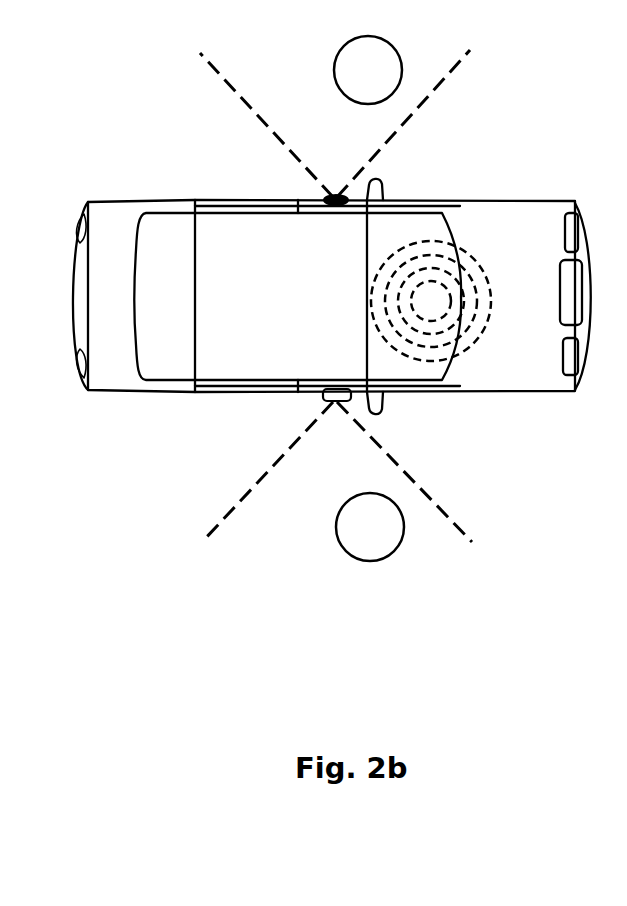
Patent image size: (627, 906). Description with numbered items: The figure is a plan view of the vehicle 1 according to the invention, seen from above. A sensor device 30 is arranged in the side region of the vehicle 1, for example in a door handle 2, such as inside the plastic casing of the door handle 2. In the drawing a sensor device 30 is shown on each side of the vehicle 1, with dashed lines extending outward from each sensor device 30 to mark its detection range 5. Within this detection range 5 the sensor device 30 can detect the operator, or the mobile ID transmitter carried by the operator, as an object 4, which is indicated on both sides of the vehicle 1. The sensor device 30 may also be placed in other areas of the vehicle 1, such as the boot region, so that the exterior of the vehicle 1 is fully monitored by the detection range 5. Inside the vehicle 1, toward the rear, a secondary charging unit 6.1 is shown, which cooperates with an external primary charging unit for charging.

The vehicle 1 is at (134, 157).
The door handle 2 is at (330, 197).
The sensor device 30 is at (219, 307).
The object 4 is at (377, 85).
The detection range 5 is at (450, 77).
The secondary charging unit 6.1 is at (481, 259).